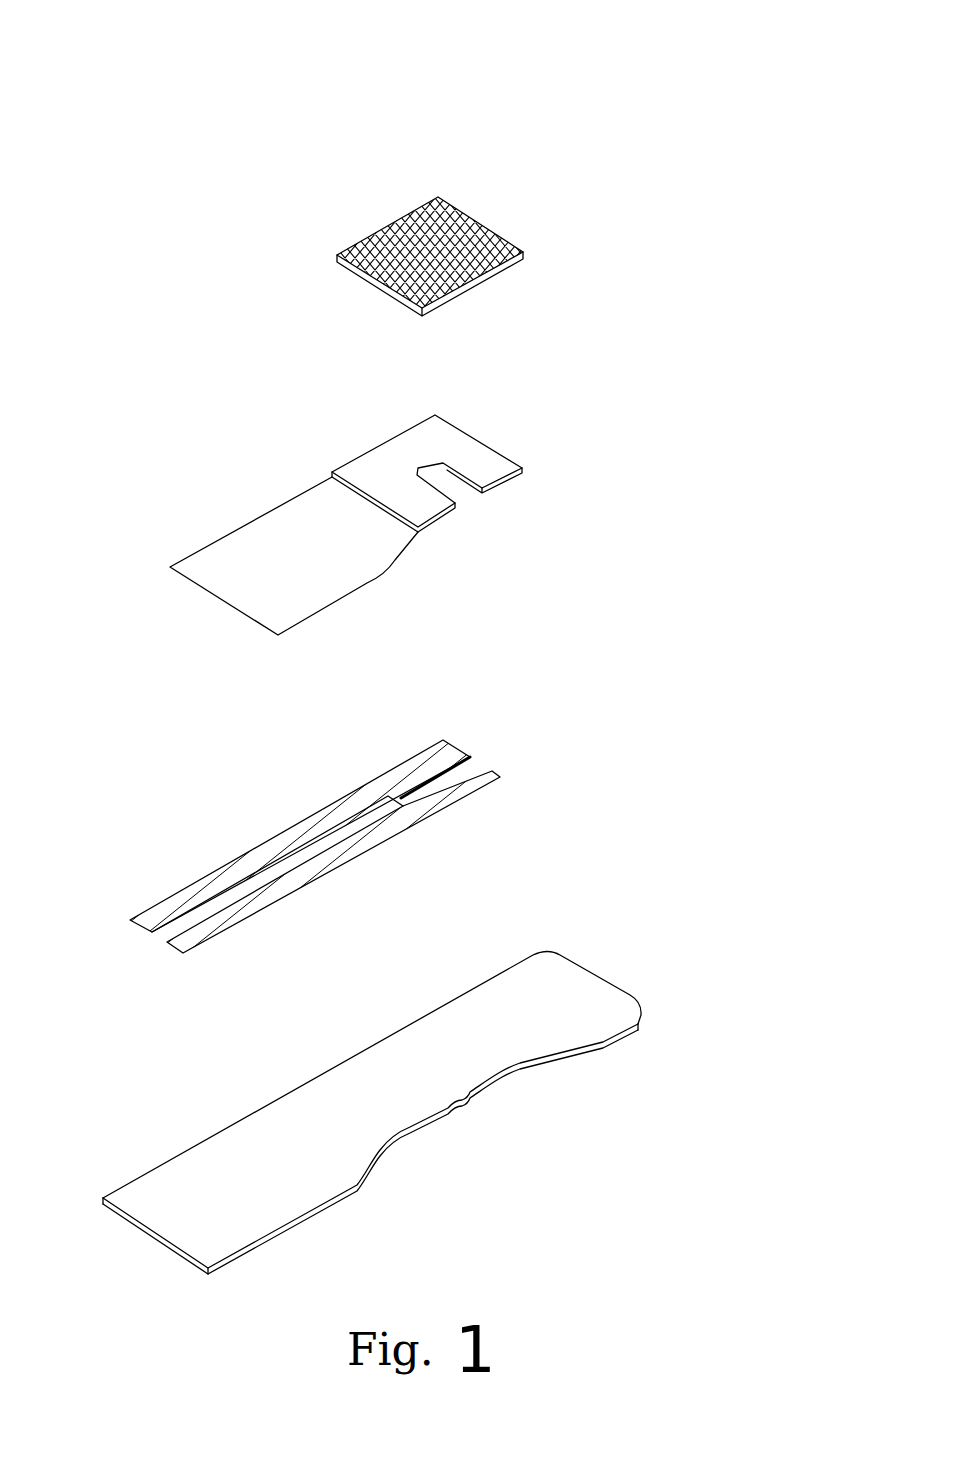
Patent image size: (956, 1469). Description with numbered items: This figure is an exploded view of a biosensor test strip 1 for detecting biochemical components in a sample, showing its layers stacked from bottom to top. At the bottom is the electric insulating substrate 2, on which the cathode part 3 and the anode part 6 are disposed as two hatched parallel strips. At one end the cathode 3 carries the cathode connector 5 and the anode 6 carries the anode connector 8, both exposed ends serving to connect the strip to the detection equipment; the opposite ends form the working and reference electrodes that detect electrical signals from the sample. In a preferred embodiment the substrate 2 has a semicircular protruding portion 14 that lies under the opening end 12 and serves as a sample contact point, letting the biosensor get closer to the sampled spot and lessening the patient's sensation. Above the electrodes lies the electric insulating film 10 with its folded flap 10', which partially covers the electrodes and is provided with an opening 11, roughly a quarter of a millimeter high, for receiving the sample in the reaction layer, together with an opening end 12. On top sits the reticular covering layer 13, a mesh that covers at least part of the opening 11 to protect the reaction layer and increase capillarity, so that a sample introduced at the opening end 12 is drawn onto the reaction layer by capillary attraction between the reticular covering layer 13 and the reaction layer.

The biosensor test strip 1 is at (494, 156).
The electric insulating substrate 2 is at (423, 1060).
The cathode part 3 is at (315, 863).
The cathode connector 5 is at (197, 937).
The anode part 6 is at (274, 837).
The anode connector 8 is at (158, 903).
The electric insulating film 10 is at (420, 515).
The electric insulating film 10' is at (311, 569).
The opening 11 is at (453, 487).
The opening end 12 is at (473, 505).
The reticular covering layer 13 is at (477, 250).
The protruding portion 14 is at (468, 1103).